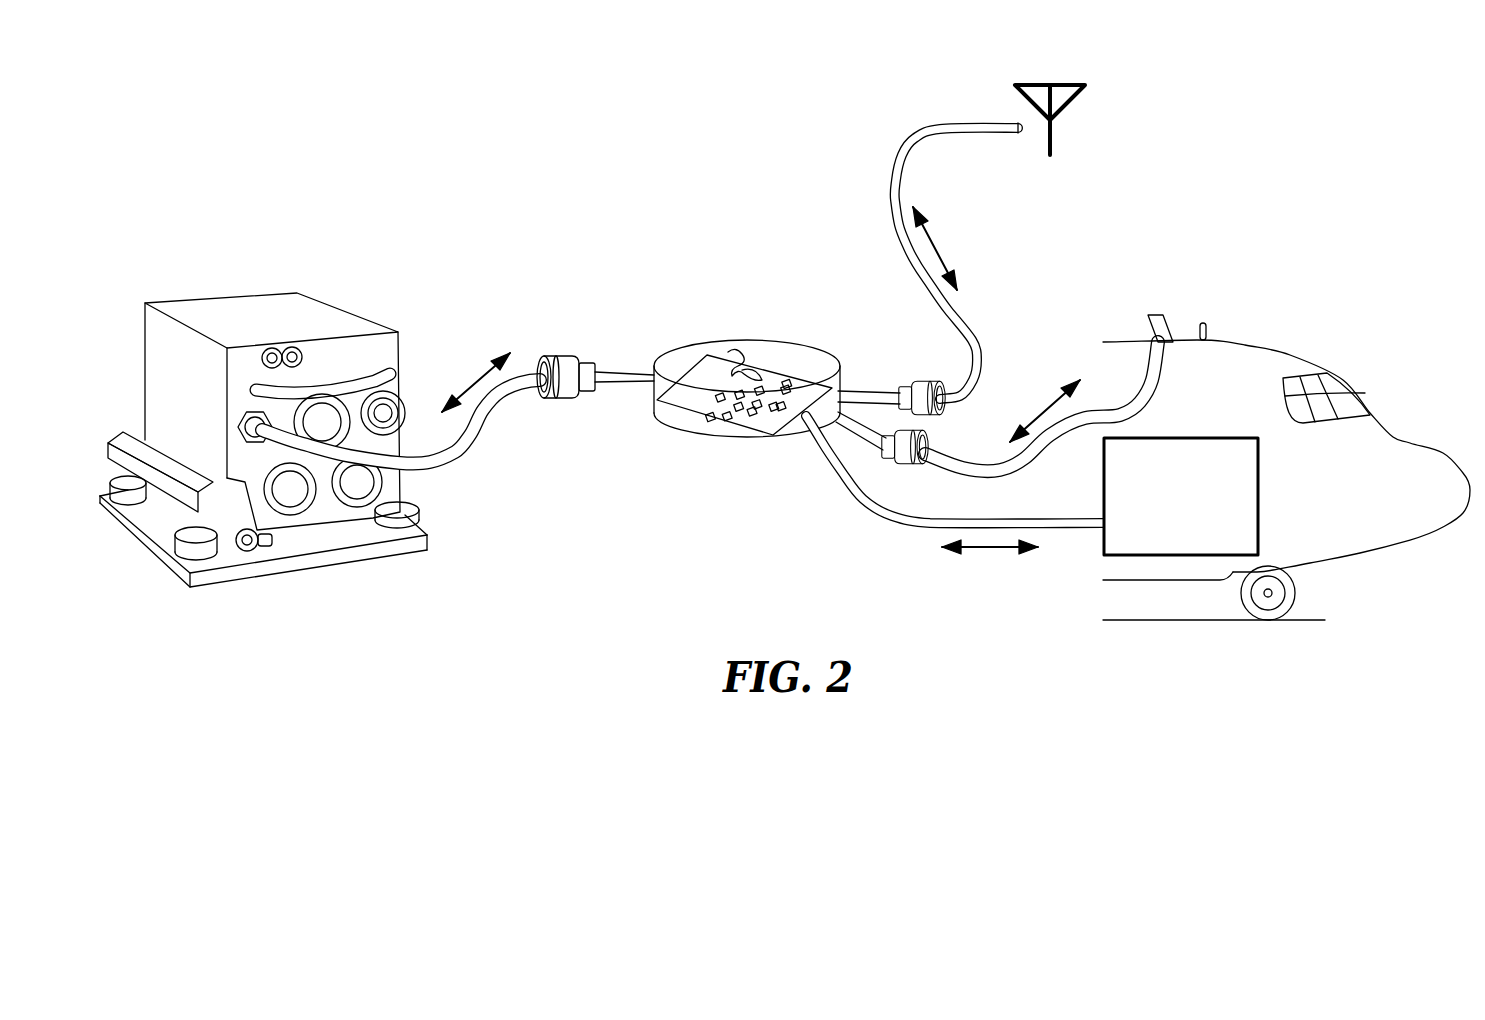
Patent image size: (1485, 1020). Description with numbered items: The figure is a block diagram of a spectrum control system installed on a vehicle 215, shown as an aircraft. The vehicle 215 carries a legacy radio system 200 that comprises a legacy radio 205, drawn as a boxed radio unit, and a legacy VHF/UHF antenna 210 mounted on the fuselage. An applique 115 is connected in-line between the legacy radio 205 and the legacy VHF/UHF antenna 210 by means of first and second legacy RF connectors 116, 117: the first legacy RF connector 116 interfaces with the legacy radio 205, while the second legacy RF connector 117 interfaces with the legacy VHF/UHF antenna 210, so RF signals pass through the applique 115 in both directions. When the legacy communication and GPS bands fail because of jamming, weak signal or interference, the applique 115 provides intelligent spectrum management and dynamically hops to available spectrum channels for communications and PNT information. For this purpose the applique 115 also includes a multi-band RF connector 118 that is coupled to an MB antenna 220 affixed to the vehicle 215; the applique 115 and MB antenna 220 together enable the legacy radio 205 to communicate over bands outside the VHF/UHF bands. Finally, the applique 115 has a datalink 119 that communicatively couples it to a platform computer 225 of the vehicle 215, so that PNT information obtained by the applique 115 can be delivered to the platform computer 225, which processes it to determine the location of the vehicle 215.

The legacy radio system 200 is at (1262, 148).
The legacy radio 205 is at (253, 312).
The applique 115 is at (693, 340).
The first legacy RF connector 116 is at (563, 357).
The second legacy RF connector 117 is at (897, 465).
The multi-band RF connector 118 is at (923, 380).
The datalink 119 is at (863, 513).
The legacy VHF/UHF antenna 210 is at (1167, 322).
The vehicle 215 is at (1310, 360).
The MB antenna 220 is at (1052, 140).
The platform computer 225 is at (1158, 545).